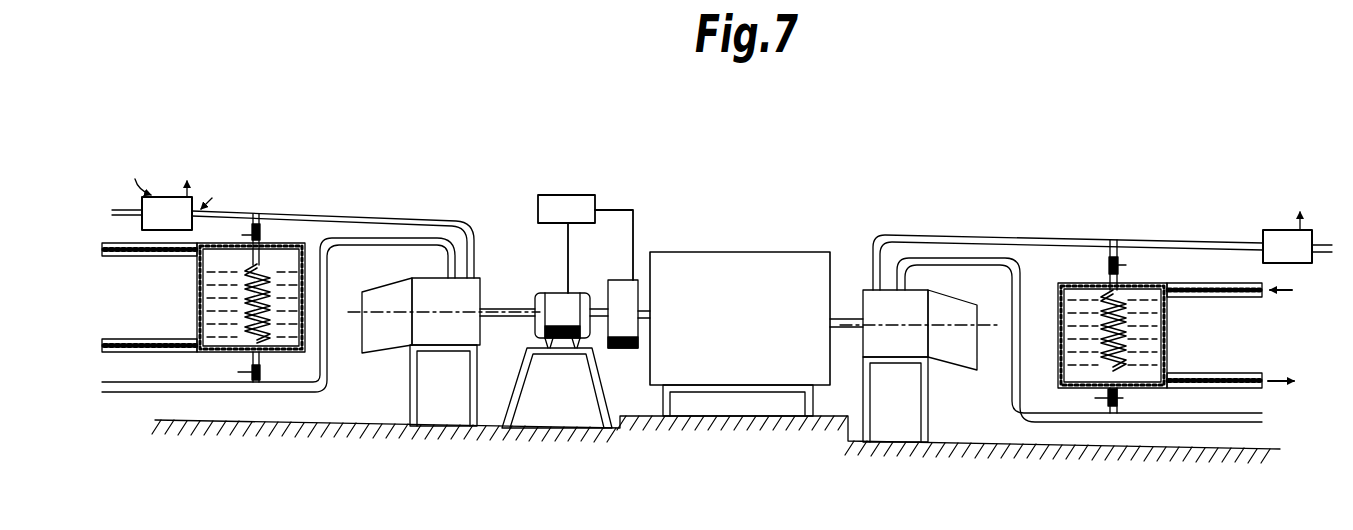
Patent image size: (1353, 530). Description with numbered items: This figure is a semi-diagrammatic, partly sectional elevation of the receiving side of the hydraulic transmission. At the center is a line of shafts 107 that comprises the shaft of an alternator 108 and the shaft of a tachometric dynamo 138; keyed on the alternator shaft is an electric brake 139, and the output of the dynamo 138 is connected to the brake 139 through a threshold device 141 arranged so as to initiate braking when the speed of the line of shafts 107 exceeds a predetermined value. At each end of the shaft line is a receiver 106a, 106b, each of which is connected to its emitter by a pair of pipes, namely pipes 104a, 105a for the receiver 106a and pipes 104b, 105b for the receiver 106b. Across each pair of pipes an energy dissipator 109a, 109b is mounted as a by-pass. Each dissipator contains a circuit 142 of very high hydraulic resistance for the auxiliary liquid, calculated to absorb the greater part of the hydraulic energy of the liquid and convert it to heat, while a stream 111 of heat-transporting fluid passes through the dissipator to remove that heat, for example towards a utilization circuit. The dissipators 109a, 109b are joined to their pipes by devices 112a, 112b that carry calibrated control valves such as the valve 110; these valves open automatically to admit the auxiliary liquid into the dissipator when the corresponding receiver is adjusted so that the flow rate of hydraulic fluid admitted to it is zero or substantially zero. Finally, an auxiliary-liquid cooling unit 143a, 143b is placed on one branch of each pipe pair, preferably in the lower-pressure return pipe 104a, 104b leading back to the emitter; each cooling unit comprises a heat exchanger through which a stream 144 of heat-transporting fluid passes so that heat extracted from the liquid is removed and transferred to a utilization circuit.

The return pipe 104a is at (1313, 243).
The return pipe 104b is at (390, 220).
The pipe 105a is at (1224, 413).
The pipe 105b is at (330, 262).
The receiver 106a is at (893, 340).
The receiver 106b is at (433, 322).
The line of shafts 107 is at (370, 311).
The alternator 108 is at (770, 270).
The energy dissipator 109a is at (1140, 302).
The energy dissipator 109b is at (222, 318).
The control valve 110 is at (261, 231).
The stream of heat-transporting fluid 111 is at (118, 252).
The connecting device with calibrated control valves 112a is at (1108, 234).
The connecting device with calibrated control valves 112b is at (252, 210).
The tachometric dynamo 138 is at (560, 300).
The electric brake 139 is at (636, 290).
The threshold device 141 is at (571, 203).
The circuit of very high hydraulic resistance 142 is at (270, 343).
The auxiliary-liquid cooling unit 143a is at (1276, 229).
The auxiliary-liquid cooling unit 143b is at (158, 196).
The stream of heat-transporting fluid 144 is at (1306, 185).